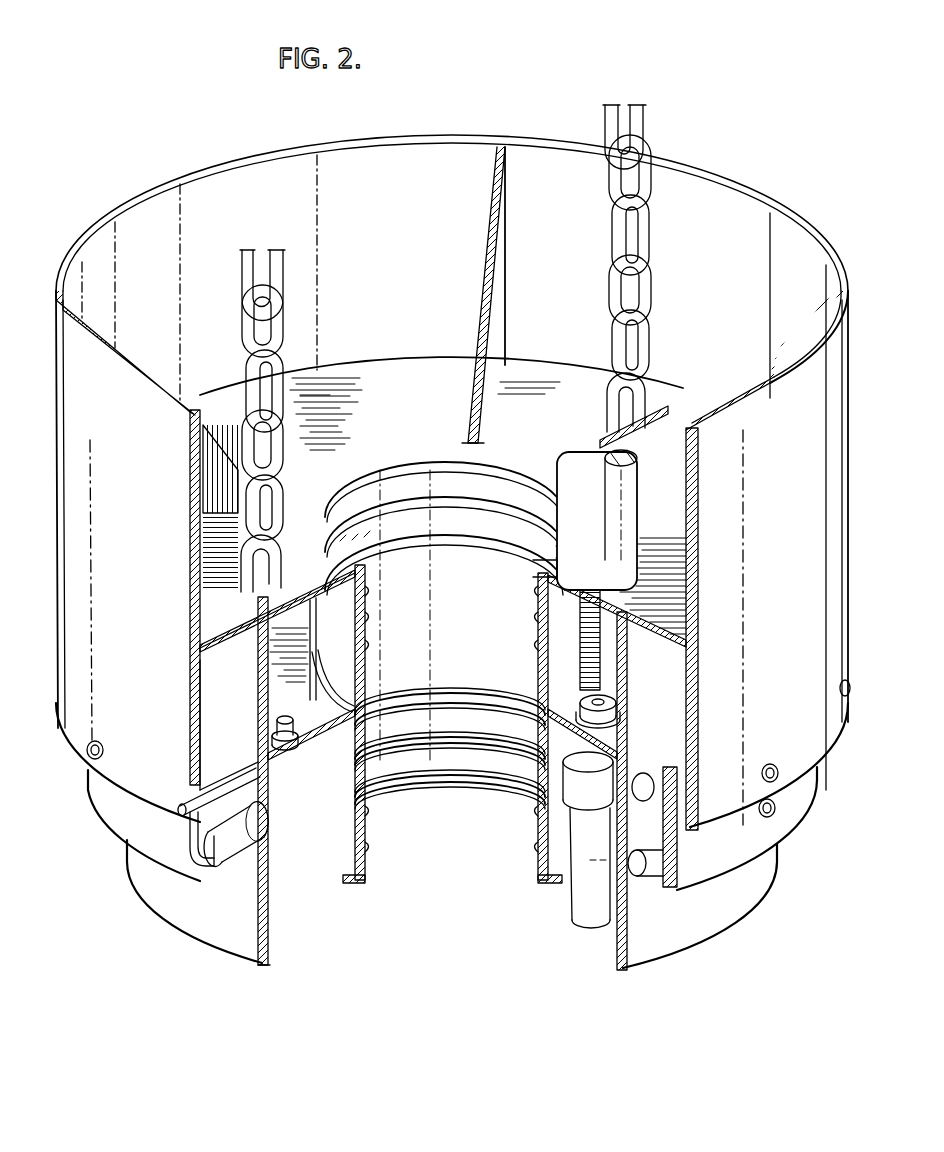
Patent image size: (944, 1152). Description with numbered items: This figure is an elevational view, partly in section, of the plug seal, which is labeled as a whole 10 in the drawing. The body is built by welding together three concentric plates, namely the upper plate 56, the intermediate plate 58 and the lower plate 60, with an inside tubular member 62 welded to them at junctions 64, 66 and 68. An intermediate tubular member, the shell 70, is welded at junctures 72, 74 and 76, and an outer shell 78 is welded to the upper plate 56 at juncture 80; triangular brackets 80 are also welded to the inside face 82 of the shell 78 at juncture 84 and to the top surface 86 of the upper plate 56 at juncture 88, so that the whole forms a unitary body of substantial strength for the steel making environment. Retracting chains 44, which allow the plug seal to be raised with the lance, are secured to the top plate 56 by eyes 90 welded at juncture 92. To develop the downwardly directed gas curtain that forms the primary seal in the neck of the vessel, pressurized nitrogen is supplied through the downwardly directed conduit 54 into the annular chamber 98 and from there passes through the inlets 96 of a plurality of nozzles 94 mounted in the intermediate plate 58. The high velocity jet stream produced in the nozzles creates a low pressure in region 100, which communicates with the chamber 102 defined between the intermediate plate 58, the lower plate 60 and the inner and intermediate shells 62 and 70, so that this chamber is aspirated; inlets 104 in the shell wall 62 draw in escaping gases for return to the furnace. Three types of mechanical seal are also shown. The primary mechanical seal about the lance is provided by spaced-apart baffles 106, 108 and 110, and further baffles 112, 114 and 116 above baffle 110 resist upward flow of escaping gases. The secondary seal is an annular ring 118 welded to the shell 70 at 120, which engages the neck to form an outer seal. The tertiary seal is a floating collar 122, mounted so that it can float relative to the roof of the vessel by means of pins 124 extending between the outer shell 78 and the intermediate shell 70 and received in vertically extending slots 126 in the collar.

The apparatus 10 is at (194, 152).
The retracting chains 44 is at (240, 320).
The downwardly directed conduit 54 is at (626, 518).
The upper plate 56 is at (210, 612).
The intermediate plate 58 is at (320, 708).
The lower plate 60 is at (337, 898).
The inside tubular member 62 is at (356, 800).
The junction 64 is at (352, 886).
The junction 66 is at (314, 658).
The junction 68 is at (346, 572).
The intermediate shell 70 is at (242, 942).
The juncture 72 is at (282, 938).
The juncture 74 is at (262, 757).
The juncture 76 is at (236, 636).
The outer shell 78 is at (72, 432).
The triangular brackets 80 is at (482, 280).
The inside face 82 is at (384, 234).
The juncture 84 is at (508, 284).
The top surface 86 is at (384, 414).
The juncture 88 is at (492, 412).
The eyes 90 is at (604, 396).
The juncture 92 is at (665, 410).
The nozzles 94 is at (595, 861).
The inlets 96 is at (618, 702).
The annular chamber 98 is at (590, 651).
The low pressure region 100 is at (583, 749).
The chamber 102 is at (364, 852).
The inlets 104 is at (376, 700).
The baffle 106 is at (470, 786).
The baffle 108 is at (412, 746).
The baffle 110 is at (446, 678).
The further baffle 112 is at (428, 546).
The further baffle 114 is at (455, 506).
The further baffle 116 is at (418, 476).
The annular ring 118 is at (215, 872).
The weld 120 is at (226, 878).
The floating collar 122 is at (124, 802).
The pins 124 is at (186, 800).
The vertically extending slots 126 is at (192, 856).